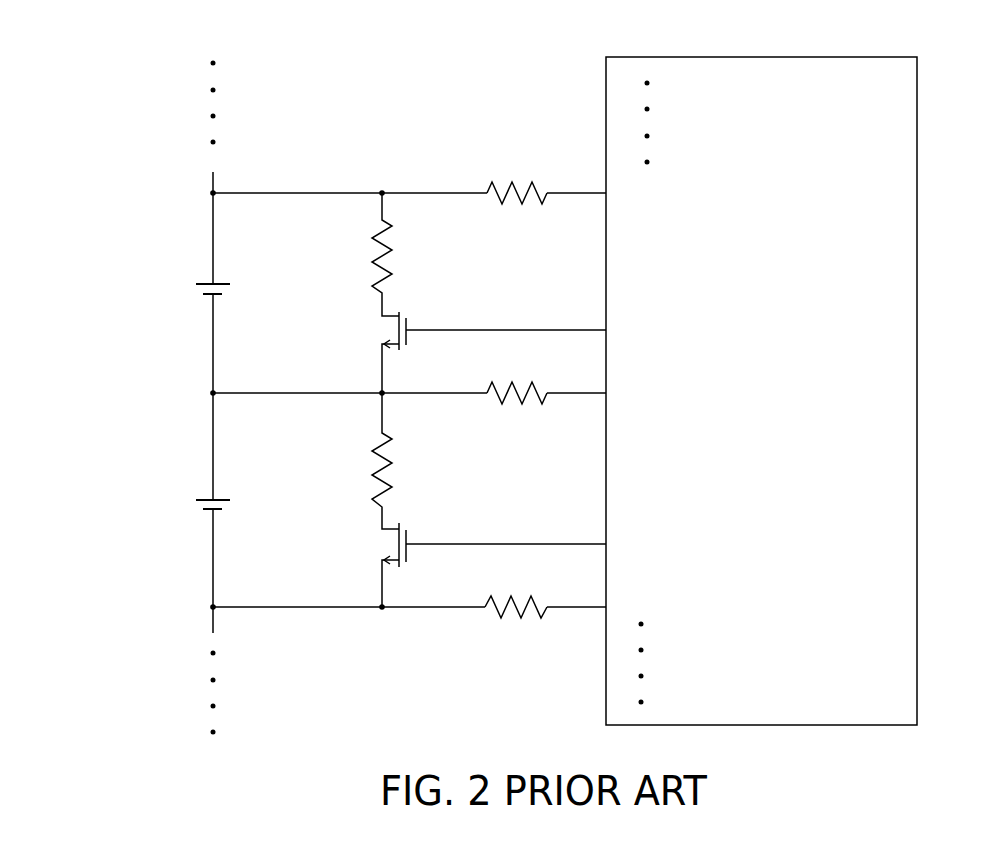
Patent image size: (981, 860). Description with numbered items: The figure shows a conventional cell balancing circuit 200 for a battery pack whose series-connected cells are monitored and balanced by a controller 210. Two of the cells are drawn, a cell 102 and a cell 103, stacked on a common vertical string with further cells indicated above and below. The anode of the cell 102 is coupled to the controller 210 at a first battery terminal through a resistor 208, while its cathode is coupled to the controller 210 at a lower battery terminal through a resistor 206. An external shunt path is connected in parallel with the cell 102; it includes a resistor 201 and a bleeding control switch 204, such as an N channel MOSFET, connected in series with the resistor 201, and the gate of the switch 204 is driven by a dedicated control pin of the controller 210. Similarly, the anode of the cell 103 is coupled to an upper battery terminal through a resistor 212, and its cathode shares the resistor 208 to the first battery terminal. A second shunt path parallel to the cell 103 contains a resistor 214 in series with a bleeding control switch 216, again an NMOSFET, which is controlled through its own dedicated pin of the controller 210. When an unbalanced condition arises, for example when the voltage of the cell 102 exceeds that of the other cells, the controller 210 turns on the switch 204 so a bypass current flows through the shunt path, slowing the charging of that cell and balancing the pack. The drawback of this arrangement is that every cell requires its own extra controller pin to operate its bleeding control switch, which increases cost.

The cell balancing circuit 200 is at (126, 117).
The cell 103 is at (202, 282).
The cell 102 is at (202, 498).
The resistor 214 is at (380, 234).
The bleeding control switch 216 is at (406, 326).
The resistor 212 is at (498, 185).
The resistor 208 is at (498, 386).
The resistor 201 is at (380, 446).
The bleeding control switch 204 is at (406, 537).
The resistor 206 is at (500, 600).
The controller 210 is at (917, 80).